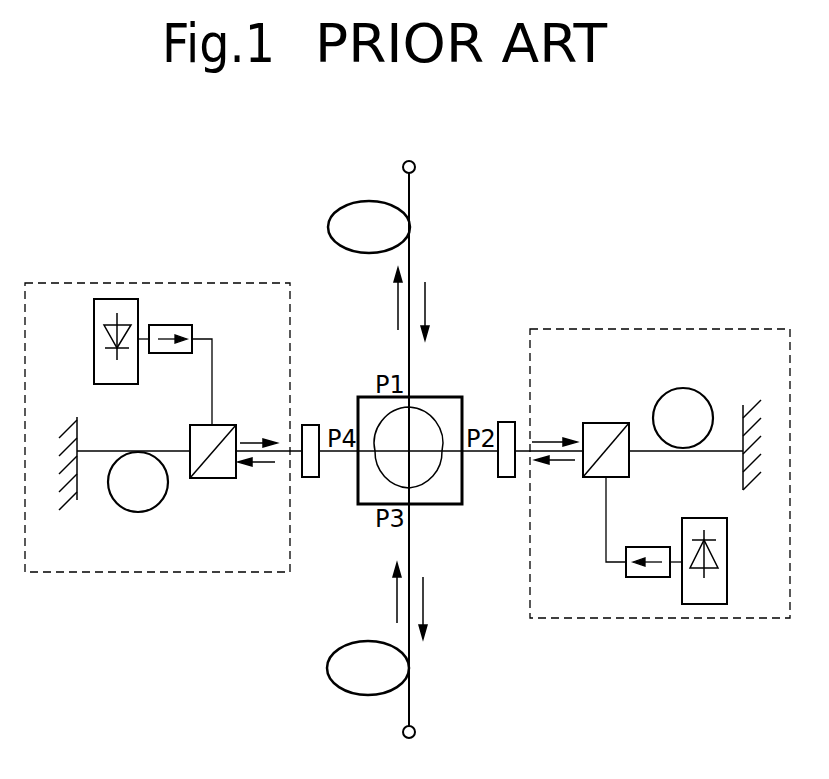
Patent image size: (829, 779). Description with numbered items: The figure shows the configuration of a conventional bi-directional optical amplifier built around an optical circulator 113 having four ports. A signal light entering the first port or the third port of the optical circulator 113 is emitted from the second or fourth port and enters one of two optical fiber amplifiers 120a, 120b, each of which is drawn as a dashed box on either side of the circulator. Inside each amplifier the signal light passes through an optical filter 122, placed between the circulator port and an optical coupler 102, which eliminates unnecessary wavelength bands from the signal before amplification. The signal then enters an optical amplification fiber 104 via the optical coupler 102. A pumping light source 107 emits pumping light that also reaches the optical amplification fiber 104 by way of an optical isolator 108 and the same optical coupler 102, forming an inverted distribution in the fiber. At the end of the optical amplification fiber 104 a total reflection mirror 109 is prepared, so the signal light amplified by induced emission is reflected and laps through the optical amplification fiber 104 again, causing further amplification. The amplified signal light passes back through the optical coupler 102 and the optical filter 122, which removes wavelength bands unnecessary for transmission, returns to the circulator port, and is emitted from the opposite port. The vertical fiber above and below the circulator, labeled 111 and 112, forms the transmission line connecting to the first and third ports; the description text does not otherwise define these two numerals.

The optical coupler 102 is at (228, 423).
The optical amplification fiber 104 is at (160, 451).
The pumping light source 107 is at (94, 333).
The optical isolator 108 is at (186, 325).
The total reflection mirror 109 is at (77, 430).
The optical fiber transmission line 111 is at (412, 254).
The optical fiber transmission line 112 is at (411, 651).
The optical circulator 113 is at (434, 391).
The optical fiber amplifier 120a is at (601, 306).
The optical fiber amplifier 120b is at (162, 276).
The optical filter 122 is at (313, 425).